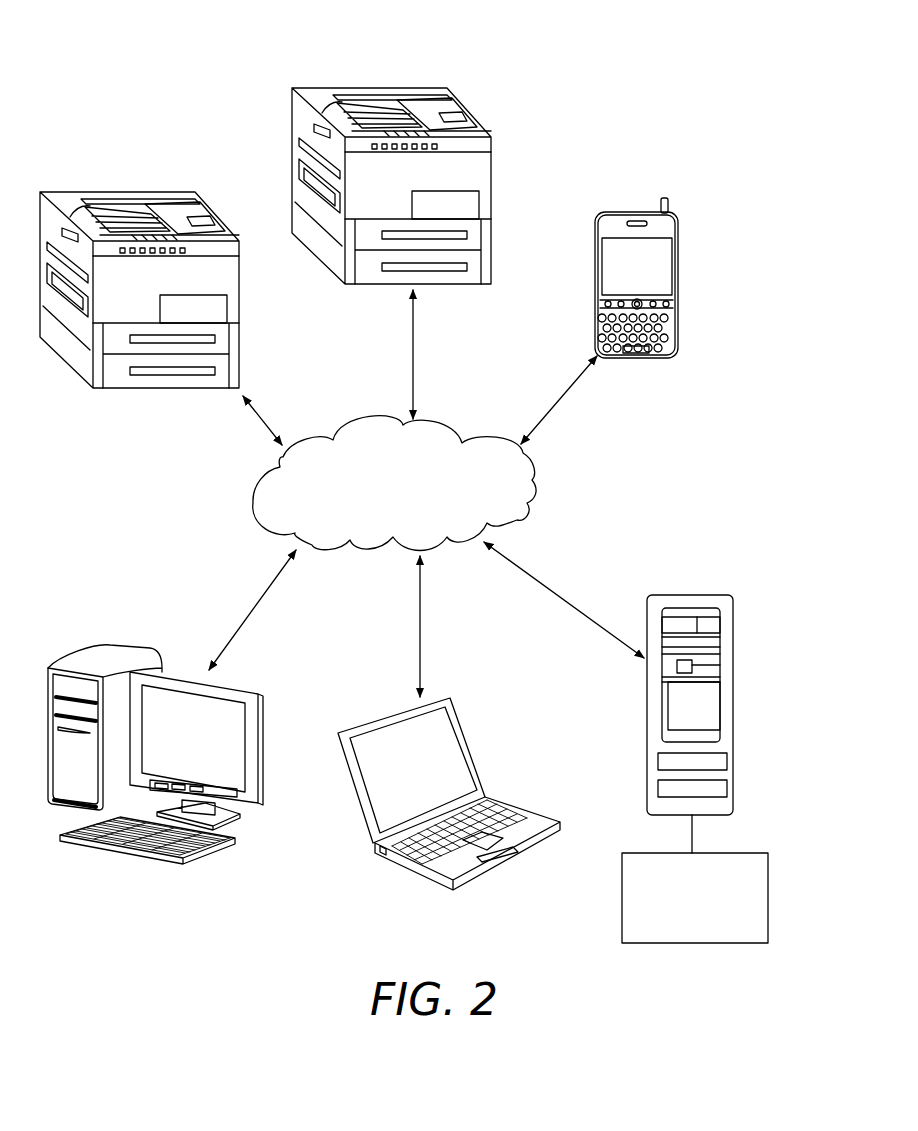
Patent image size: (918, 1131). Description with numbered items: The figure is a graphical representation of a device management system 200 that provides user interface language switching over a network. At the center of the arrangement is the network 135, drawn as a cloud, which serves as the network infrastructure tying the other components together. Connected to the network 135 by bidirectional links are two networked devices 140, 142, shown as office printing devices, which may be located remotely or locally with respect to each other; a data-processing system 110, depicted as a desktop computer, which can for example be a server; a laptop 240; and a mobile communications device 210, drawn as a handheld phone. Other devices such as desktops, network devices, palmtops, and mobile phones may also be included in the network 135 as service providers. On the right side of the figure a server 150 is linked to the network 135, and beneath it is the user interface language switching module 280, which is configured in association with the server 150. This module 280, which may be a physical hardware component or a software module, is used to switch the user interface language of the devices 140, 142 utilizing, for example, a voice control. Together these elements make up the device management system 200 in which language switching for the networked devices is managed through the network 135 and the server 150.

The device management system 200 is at (620, 56).
The networked device 140 is at (392, 87).
The networked device 142 is at (135, 190).
The mobile communications device 210 is at (632, 210).
The network 135 is at (352, 422).
The data-processing system 110 is at (130, 653).
The laptop 240 is at (472, 752).
The server 150 is at (702, 593).
The user interface language switching module 280 is at (623, 898).